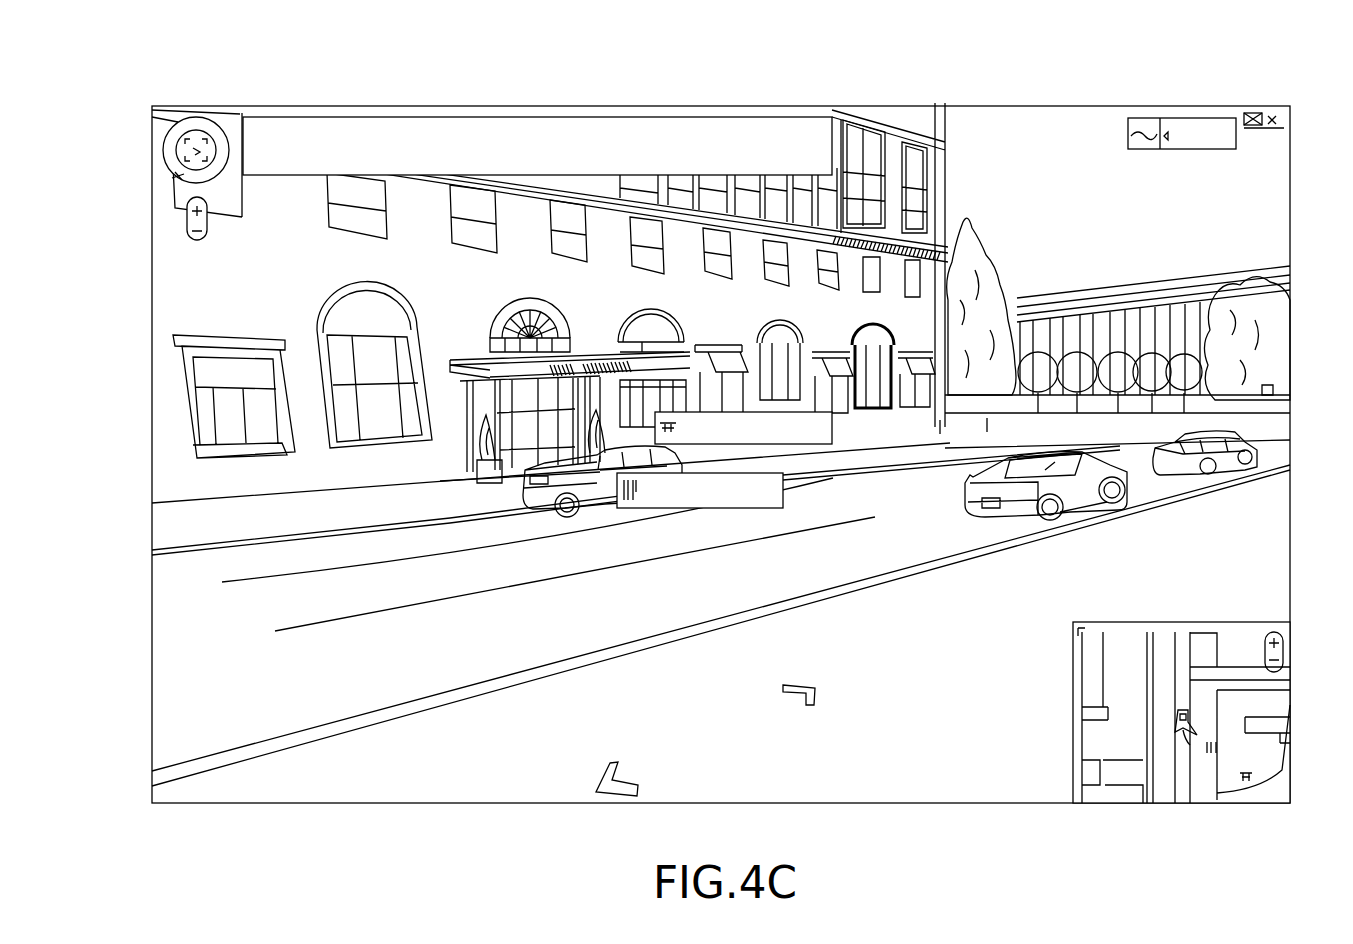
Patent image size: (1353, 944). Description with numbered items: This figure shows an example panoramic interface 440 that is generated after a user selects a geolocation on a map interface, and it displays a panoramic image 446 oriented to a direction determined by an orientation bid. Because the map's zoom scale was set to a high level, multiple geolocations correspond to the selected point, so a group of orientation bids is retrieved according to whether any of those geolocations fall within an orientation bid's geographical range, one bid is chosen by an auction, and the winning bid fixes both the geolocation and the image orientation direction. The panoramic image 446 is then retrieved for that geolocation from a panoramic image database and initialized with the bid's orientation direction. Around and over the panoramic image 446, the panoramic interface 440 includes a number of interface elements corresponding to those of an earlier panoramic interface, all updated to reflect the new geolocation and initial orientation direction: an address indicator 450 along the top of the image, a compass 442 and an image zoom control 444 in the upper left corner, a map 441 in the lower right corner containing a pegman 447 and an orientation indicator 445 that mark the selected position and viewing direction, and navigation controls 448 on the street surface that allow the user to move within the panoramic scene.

The panoramic interface 440 is at (1348, 63).
The map 441 is at (1210, 750).
The compass 442 is at (187, 128).
The image zoom control 444 is at (188, 213).
The orientation indicator 445 is at (1190, 745).
The panoramic image 446 is at (1044, 105).
The pegman 447 is at (1183, 718).
The navigation controls 448 is at (600, 790).
The address indicator 450 is at (593, 116).